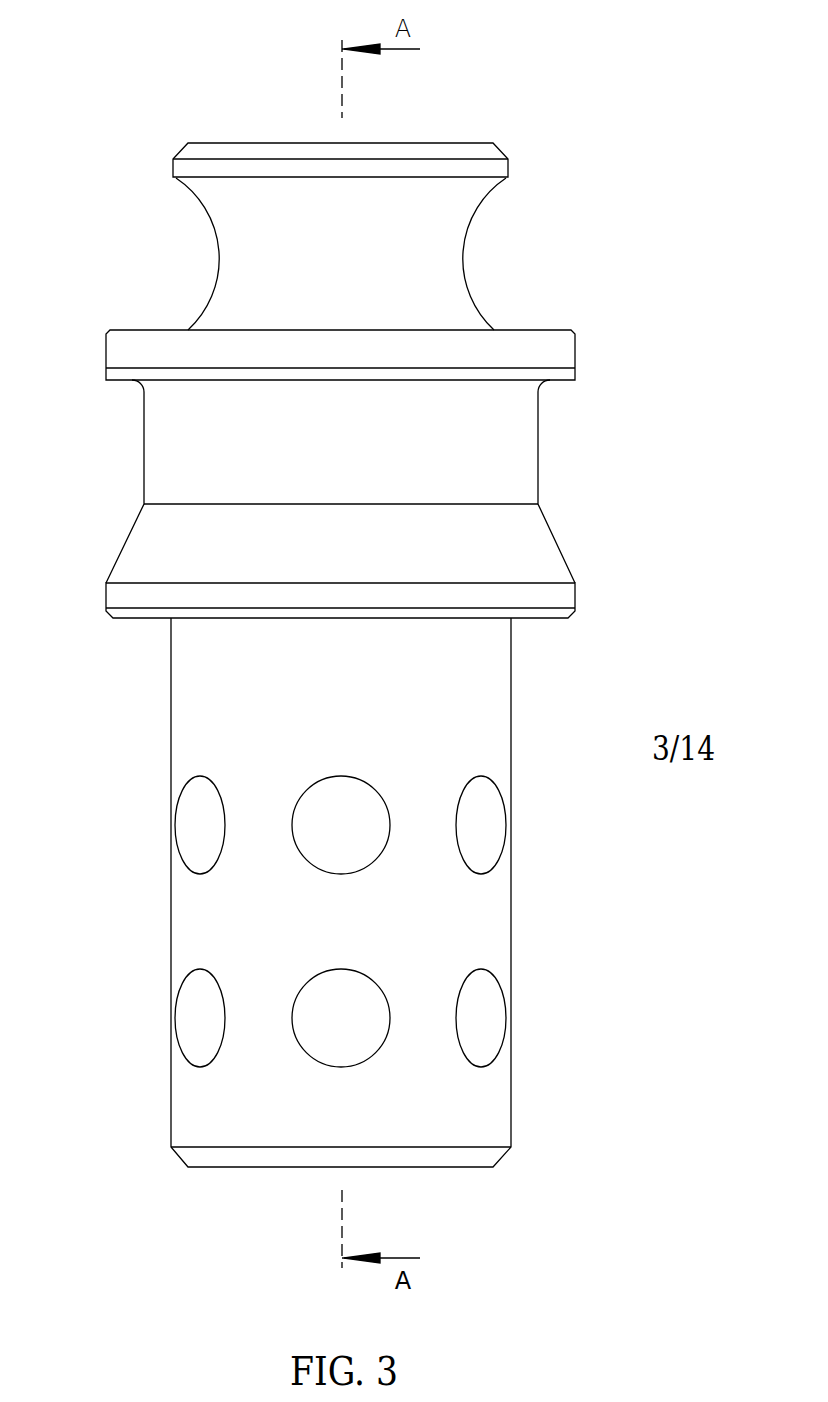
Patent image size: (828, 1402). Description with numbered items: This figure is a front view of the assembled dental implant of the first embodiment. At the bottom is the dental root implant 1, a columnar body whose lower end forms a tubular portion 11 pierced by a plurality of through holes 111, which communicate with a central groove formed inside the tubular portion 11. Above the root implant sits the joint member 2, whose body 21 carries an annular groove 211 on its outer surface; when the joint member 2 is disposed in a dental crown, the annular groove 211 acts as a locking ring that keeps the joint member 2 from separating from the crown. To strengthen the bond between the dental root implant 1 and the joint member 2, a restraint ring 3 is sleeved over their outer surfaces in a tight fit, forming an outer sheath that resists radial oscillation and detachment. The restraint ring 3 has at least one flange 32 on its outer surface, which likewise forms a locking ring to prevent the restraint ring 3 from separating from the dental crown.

The dental root implant 1 is at (424, 892).
The tubular portion 11 is at (382, 892).
The through holes 111 is at (497, 998).
The joint member 2 is at (343, 207).
The body 21 is at (177, 157).
The annular groove 211 is at (492, 190).
The restraint ring 3 is at (304, 466).
The flange 32 is at (106, 368).